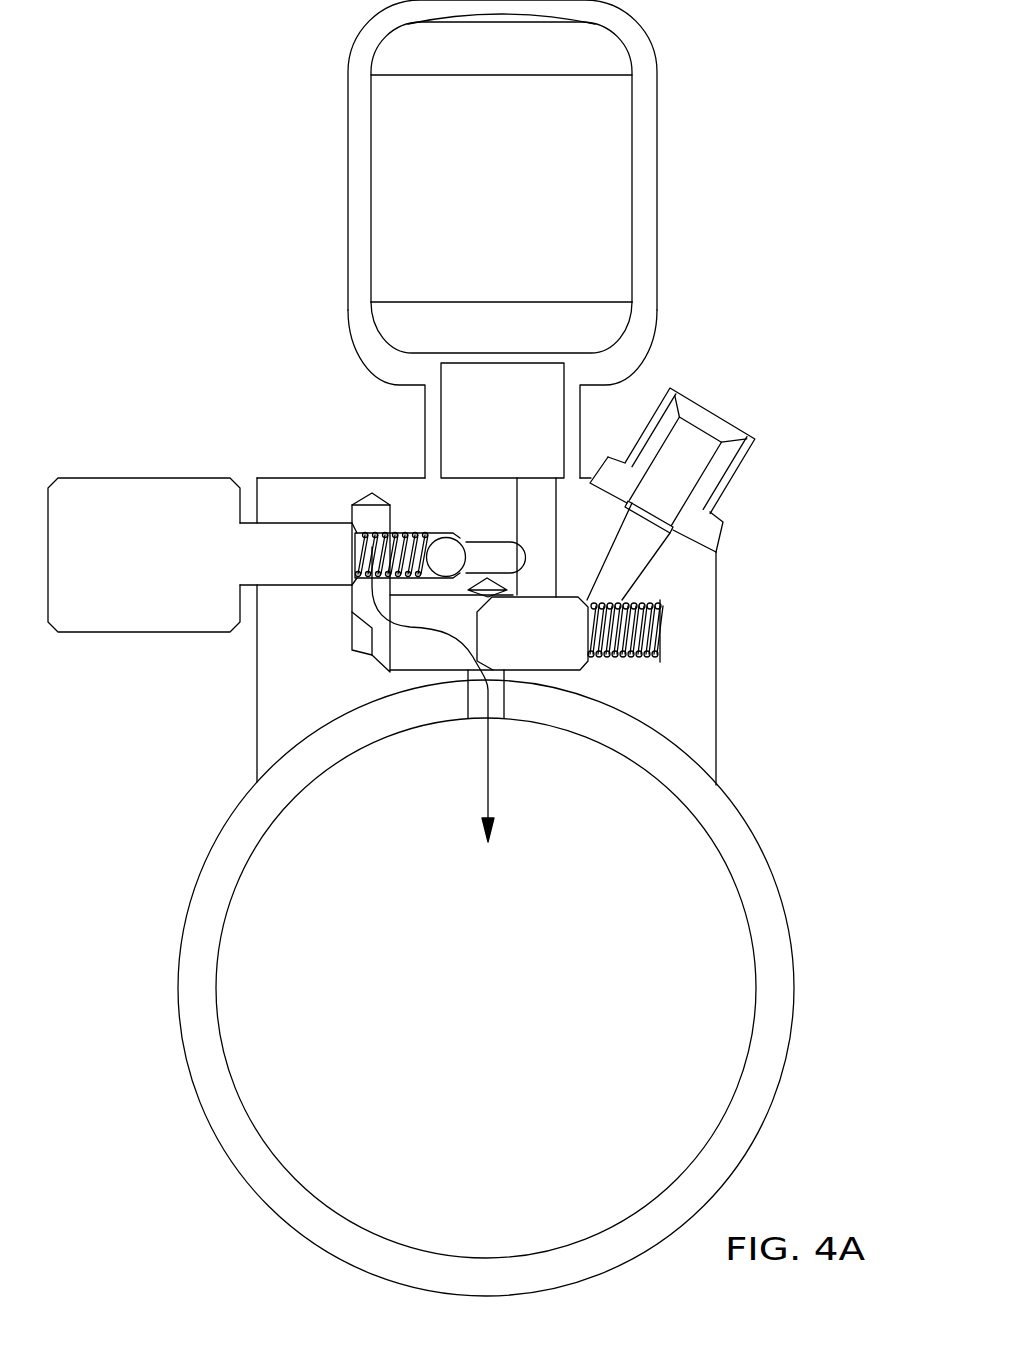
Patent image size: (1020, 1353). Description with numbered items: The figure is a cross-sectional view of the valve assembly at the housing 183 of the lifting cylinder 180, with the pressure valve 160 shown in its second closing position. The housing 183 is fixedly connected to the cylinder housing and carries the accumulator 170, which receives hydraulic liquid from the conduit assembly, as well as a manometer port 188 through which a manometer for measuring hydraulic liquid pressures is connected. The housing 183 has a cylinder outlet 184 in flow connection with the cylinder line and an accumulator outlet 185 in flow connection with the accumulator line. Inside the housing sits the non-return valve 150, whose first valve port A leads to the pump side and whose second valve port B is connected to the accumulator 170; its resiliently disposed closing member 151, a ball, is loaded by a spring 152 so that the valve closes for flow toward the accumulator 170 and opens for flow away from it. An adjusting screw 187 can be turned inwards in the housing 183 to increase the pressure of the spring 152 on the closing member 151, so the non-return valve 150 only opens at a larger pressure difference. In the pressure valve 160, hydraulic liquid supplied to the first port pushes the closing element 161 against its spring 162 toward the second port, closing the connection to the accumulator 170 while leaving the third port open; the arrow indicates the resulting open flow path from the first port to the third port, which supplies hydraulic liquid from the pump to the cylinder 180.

The non-return valve 150 is at (324, 501).
The closing member 151 is at (446, 557).
The spring 152 is at (387, 555).
The pressure valve 160 is at (673, 688).
The closing element 161 is at (512, 633).
The spring 162 is at (608, 633).
The accumulator 170 is at (415, 191).
The lifting cylinder 180 is at (335, 1085).
The housing 183 is at (693, 593).
The cylinder outlet 184 is at (498, 703).
The accumulator outlet 185 is at (538, 510).
The adjusting screw 187 is at (145, 585).
The manometer port 188 is at (732, 458).